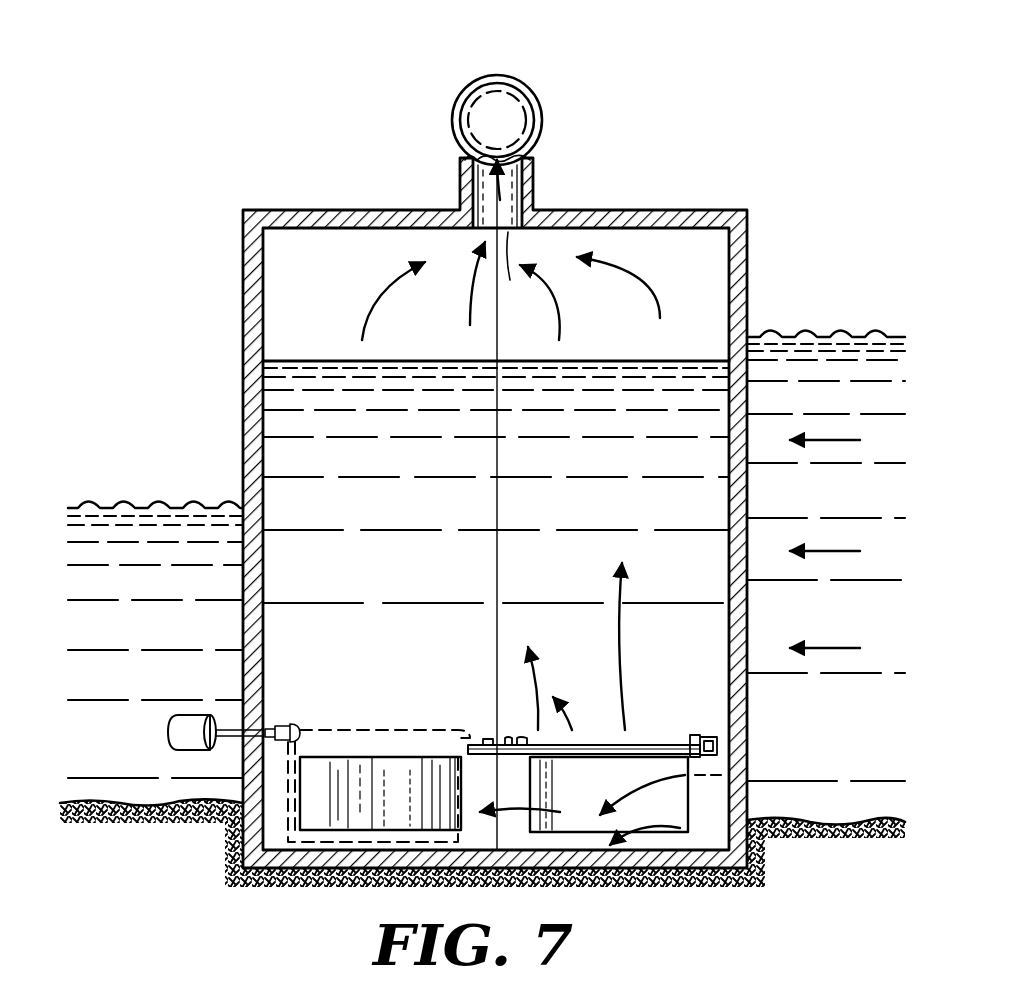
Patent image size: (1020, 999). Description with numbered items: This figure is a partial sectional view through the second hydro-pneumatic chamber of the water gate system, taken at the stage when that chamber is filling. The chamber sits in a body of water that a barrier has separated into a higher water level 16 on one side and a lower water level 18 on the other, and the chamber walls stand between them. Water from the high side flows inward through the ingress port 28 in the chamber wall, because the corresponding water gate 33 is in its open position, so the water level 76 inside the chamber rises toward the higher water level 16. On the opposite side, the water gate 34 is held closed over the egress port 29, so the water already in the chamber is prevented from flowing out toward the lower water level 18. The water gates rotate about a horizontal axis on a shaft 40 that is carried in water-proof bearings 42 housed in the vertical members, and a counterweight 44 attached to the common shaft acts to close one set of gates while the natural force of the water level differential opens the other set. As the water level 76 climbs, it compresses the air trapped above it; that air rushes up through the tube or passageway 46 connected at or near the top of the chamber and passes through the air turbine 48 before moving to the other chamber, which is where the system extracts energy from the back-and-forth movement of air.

The higher water level 16 is at (810, 328).
The lower water level 18 is at (132, 495).
The ingress port 28 is at (643, 780).
The egress port 29 is at (438, 722).
The water gate 33 is at (503, 744).
The water gate 34 is at (372, 758).
The shaft 40 is at (747, 728).
The water-proof bearings 42 is at (300, 728).
The counterweight 44 is at (195, 714).
The pipe, tube, or channel 46 is at (538, 98).
The air turbine 48 is at (458, 92).
The water level 76 is at (285, 360).